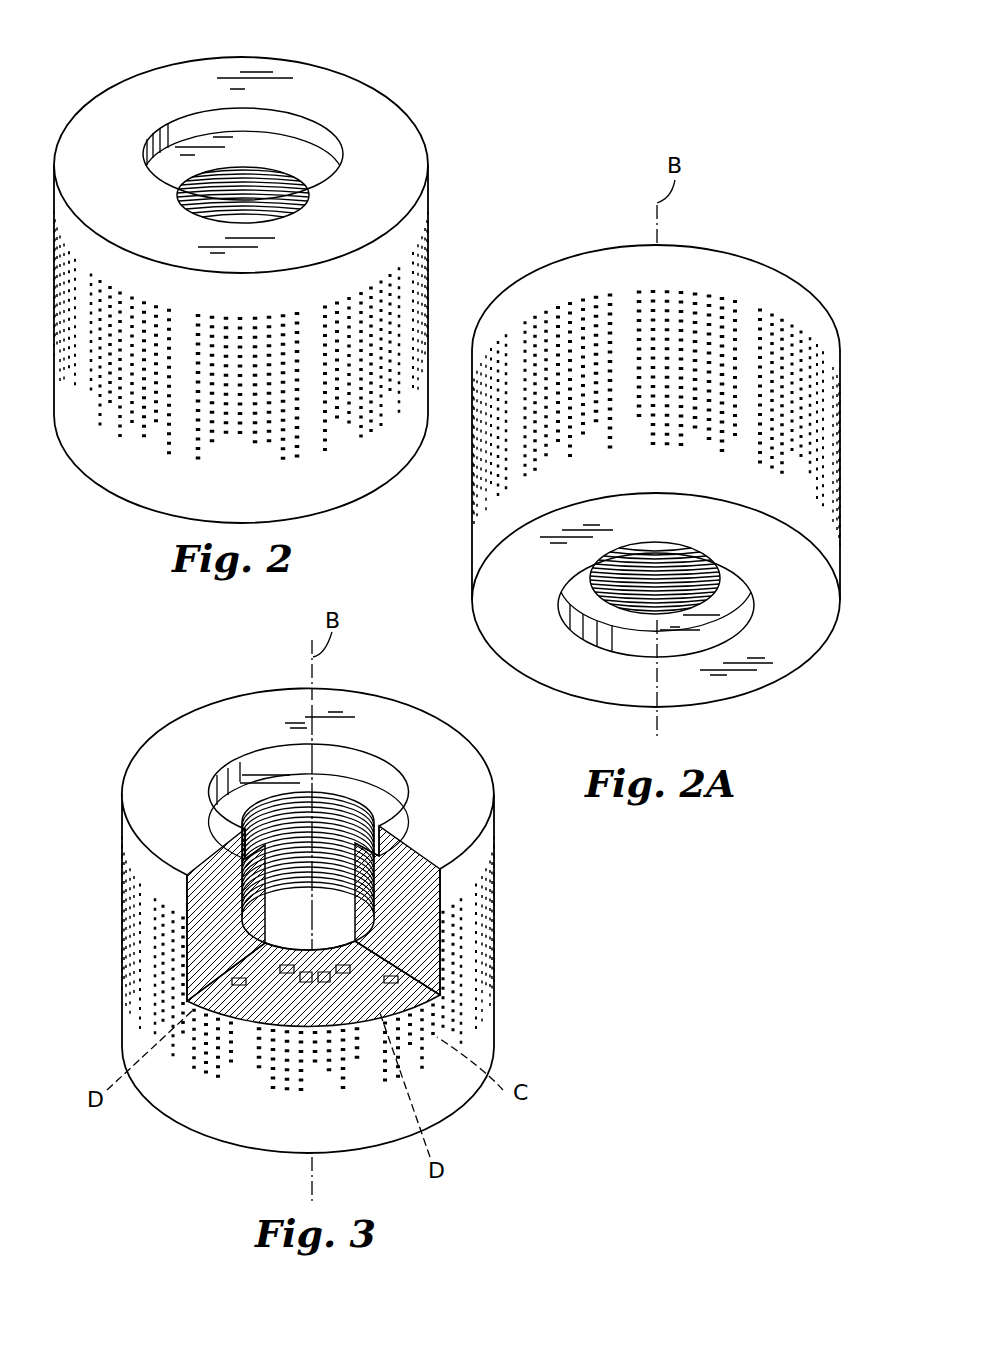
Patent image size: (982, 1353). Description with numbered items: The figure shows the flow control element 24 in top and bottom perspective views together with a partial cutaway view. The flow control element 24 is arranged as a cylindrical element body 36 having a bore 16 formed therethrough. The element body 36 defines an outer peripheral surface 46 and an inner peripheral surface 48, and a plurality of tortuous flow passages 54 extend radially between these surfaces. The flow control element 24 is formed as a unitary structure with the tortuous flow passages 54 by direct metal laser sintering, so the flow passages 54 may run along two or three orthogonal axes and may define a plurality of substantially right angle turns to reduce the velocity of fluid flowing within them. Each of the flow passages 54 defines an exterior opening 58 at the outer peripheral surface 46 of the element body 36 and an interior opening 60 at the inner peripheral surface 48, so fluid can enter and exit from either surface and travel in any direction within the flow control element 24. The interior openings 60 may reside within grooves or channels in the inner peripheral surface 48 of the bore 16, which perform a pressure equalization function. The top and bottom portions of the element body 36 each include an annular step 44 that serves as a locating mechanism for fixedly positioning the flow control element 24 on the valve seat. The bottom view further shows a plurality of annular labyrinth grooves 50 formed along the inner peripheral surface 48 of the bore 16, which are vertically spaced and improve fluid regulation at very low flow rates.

In FIG. 2, the flow control element 24 is at (108, 66).
In FIG. 2A, the flow control element 24 is at (784, 230).
In FIG. 3, the flow control element 24 is at (520, 755).
In FIG. 2, the cylindrical element body 36 is at (317, 85).
In FIG. 2A, the cylindrical element body 36 is at (793, 279).
In FIG. 3, the cylindrical element body 36 is at (457, 728).
In FIG. 2, the outer peripheral surface 46 is at (368, 478).
In FIG. 2A, the outer peripheral surface 46 is at (835, 538).
In FIG. 3, the outer peripheral surface 46 is at (487, 845).
In FIG. 2, the annular step 44 is at (203, 127).
In FIG. 2A, the annular step 44 is at (713, 640).
In FIG. 3, the annular step 44 is at (332, 750).
In FIG. 2, the inner peripheral surface 48 is at (187, 180).
In FIG. 2A, the inner peripheral surface 48 is at (712, 637).
In FIG. 3, the inner peripheral surface 48 is at (247, 813).
In FIG. 2, the bore 16 is at (228, 173).
In FIG. 3, the bore 16 is at (337, 800).
In FIG. 2, the interior opening 60 is at (288, 207).
In FIG. 3, the interior opening 60 is at (300, 830).
In FIG. 2A, the annular labyrinth grooves 50 is at (600, 640).
In FIG. 2, the exterior opening 58 is at (400, 337).
In FIG. 2A, the exterior opening 58 is at (730, 440).
In FIG. 3, the exterior opening 58 is at (318, 1063).
In FIG. 3, the tortuous flow passages 54 is at (187, 887).